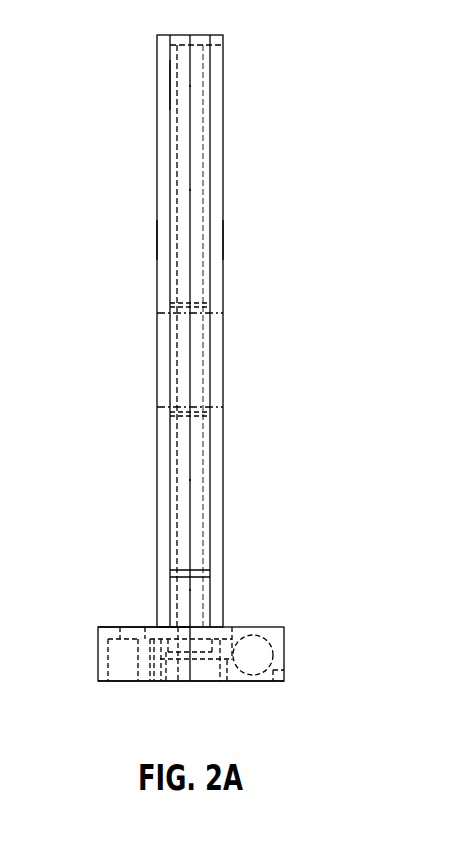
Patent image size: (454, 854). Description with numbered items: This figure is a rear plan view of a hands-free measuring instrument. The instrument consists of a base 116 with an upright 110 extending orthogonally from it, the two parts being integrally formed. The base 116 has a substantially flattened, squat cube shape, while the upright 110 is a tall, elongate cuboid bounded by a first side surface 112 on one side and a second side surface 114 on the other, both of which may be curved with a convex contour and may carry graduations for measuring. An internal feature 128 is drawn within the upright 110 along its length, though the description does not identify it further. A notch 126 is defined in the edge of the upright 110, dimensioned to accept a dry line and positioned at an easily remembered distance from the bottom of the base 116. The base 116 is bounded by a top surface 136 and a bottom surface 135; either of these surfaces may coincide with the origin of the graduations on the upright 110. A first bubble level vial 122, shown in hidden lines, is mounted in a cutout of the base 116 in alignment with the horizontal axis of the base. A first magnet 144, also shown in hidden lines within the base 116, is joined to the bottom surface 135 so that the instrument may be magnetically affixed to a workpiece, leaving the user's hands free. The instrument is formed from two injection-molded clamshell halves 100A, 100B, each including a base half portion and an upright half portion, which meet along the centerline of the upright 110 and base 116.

The upright 110 is at (228, 98).
The inner channel line 128 is at (165, 83).
The second side surface 114 is at (155, 244).
The first side surface 112 is at (225, 244).
The notch 126 is at (209, 573).
The base 116 is at (285, 686).
The top surface of the base 136 is at (112, 627).
The bottom surface of the base 135 is at (205, 689).
The first magnet 144 is at (176, 681).
The first bubble level vial 122 is at (248, 654).
The clamshell half 100B is at (128, 155).
The clamshell half 100A is at (263, 156).